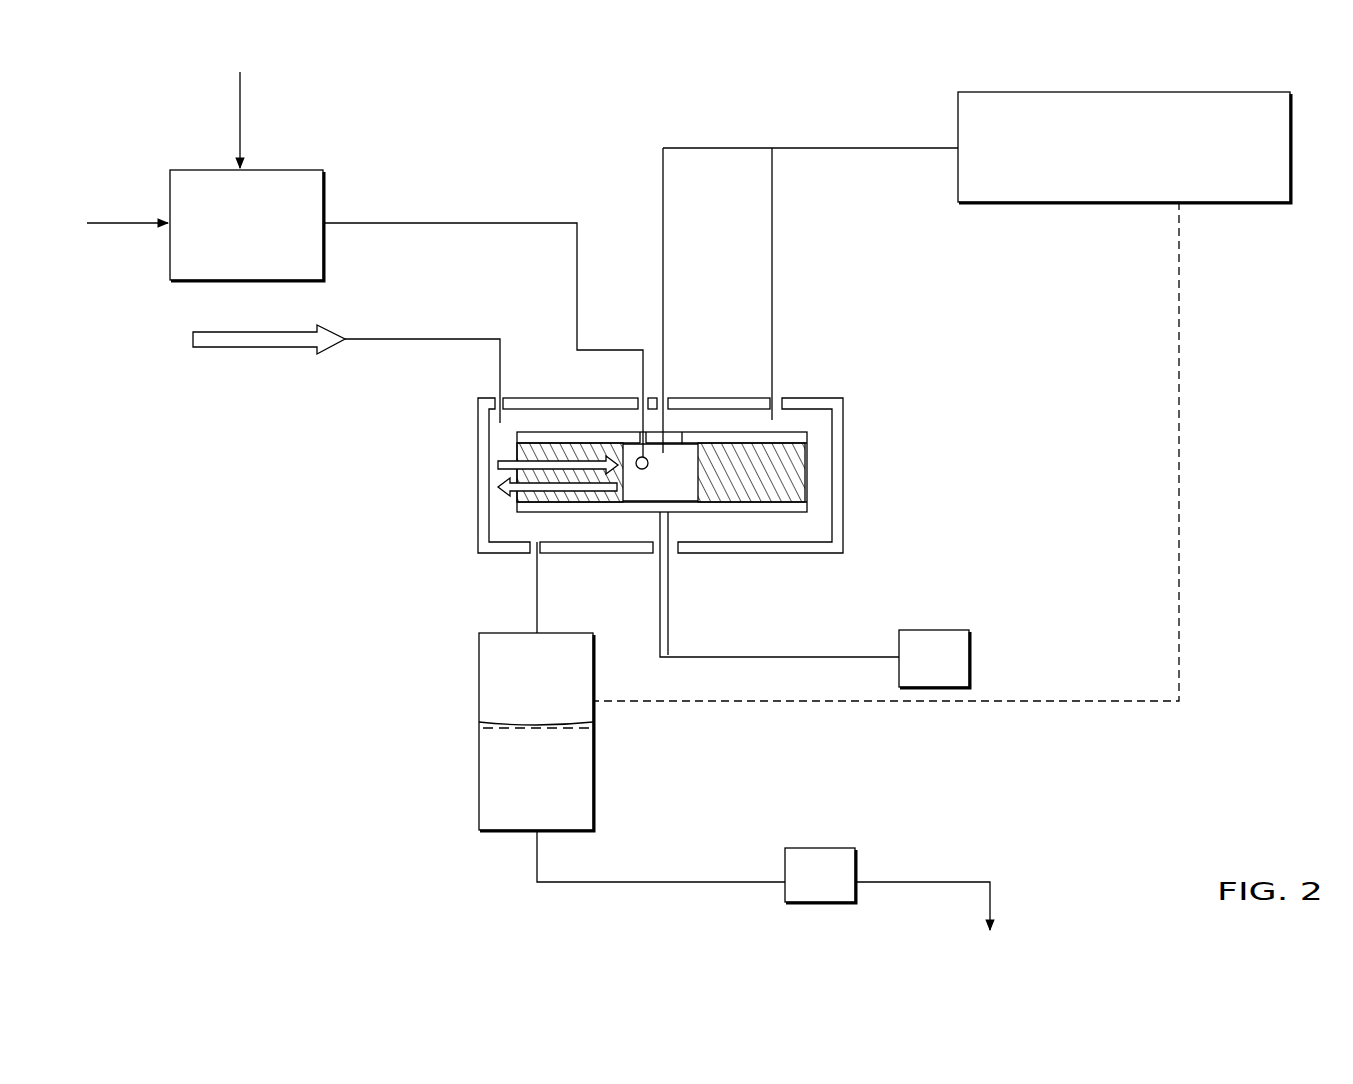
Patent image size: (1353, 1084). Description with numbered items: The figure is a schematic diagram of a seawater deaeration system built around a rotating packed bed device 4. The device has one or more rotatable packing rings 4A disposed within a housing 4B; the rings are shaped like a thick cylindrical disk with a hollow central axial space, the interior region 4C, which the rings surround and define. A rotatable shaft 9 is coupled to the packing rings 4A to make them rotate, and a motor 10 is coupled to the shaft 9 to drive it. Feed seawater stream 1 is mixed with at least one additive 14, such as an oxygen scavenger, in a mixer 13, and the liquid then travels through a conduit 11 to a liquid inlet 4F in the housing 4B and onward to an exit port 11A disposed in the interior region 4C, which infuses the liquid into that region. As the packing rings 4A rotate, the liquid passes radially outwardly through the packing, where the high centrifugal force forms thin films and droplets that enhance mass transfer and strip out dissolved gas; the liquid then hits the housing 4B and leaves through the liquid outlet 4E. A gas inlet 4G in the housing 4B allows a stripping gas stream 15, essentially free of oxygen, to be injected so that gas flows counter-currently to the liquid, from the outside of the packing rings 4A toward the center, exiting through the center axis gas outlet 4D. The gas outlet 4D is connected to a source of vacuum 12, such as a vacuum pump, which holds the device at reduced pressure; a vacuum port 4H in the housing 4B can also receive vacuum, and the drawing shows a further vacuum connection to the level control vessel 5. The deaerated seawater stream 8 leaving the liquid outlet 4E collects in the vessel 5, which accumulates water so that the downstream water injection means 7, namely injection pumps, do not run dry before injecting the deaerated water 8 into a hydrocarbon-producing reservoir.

The feed seawater stream 1 is at (118, 223).
The additive 14 is at (240, 118).
The mixer 13 is at (232, 243).
The conduit 11 is at (547, 220).
The gas stream 15 is at (253, 349).
The source of vacuum 12 is at (1110, 164).
The rotating packed bed device 4 is at (396, 469).
The rotatable packing rings 4A is at (782, 468).
The housing 4B is at (845, 493).
The interior region 4C is at (683, 487).
The gas outlet 4D is at (666, 396).
The liquid outlet 4E is at (533, 547).
The liquid inlet 4F is at (640, 397).
The gas inlet 4G is at (498, 397).
The vacuum port 4H is at (774, 395).
The exit port 11A is at (637, 470).
The rotatable shaft 9 is at (672, 605).
The motor 10 is at (917, 671).
The level control vessel 5 is at (543, 770).
The water injection means 7 is at (826, 888).
The deaerated seawater stream 8 is at (926, 924).